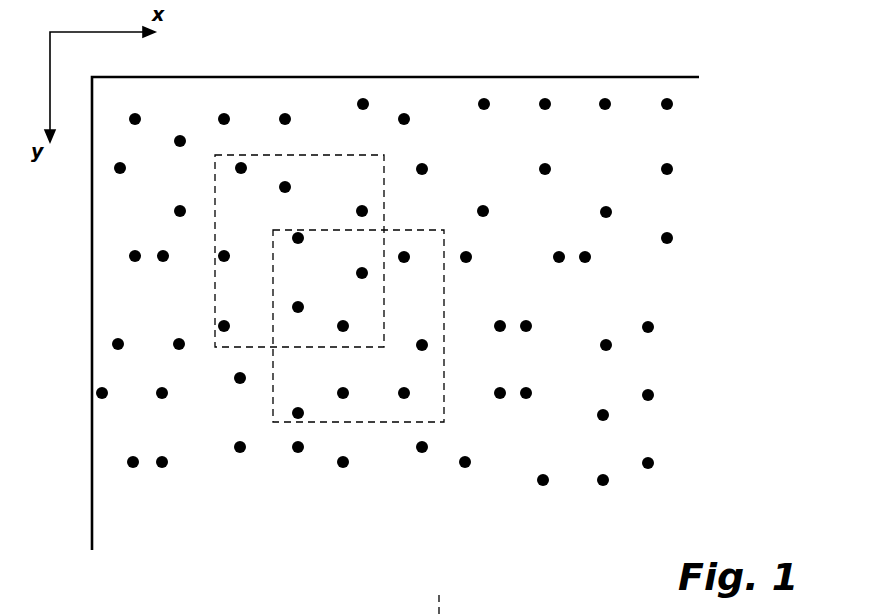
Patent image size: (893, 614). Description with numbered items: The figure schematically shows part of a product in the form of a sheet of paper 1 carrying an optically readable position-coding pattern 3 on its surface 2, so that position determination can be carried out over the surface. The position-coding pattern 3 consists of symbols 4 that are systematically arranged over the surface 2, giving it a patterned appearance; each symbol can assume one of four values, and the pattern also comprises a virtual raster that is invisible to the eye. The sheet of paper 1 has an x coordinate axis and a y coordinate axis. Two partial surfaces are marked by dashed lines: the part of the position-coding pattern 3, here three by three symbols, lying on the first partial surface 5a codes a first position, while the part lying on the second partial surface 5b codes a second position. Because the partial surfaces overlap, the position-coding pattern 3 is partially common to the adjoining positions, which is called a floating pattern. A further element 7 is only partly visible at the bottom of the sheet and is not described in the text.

The sheet of paper 1 is at (563, 73).
The surface 2 is at (189, 541).
The position-coding pattern 3 is at (421, 331).
The symbols 4 is at (547, 490).
The first partial surface 5a is at (324, 153).
The second partial surface 5b is at (415, 238).
The reference line 7 is at (476, 604).